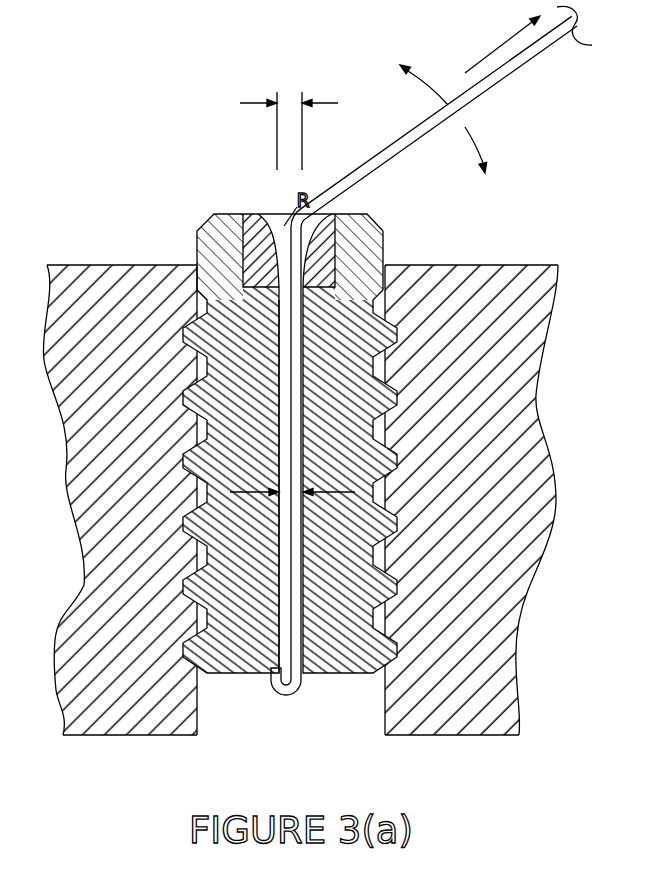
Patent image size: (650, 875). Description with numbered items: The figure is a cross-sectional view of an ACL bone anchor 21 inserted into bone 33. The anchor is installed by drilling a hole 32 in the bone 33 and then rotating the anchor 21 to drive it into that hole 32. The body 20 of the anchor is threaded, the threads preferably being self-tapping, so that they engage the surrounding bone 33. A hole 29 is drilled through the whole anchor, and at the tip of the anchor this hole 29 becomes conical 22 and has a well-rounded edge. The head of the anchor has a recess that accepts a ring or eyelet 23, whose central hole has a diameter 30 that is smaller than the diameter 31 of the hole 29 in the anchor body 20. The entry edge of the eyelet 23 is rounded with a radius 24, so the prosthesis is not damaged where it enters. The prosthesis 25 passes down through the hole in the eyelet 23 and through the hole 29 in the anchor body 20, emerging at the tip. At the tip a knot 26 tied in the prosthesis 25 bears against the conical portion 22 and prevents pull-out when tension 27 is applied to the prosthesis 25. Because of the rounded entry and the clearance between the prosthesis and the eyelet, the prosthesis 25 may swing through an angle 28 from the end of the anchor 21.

The body 20 is at (357, 339).
The bone anchor 21 is at (214, 214).
The conical portion of hole 22 is at (316, 676).
The eyelet 23 is at (257, 214).
The radius 24 is at (285, 228).
The prosthesis 25 is at (420, 124).
The knot 26 is at (278, 690).
The tension 27 is at (503, 43).
The angle 28 is at (465, 127).
The hole 29 is at (283, 373).
The diameter of eyelet hole 30 is at (287, 102).
The diameter of hole 31 is at (228, 491).
The hole in bone 32 is at (238, 707).
The bone 33 is at (470, 634).